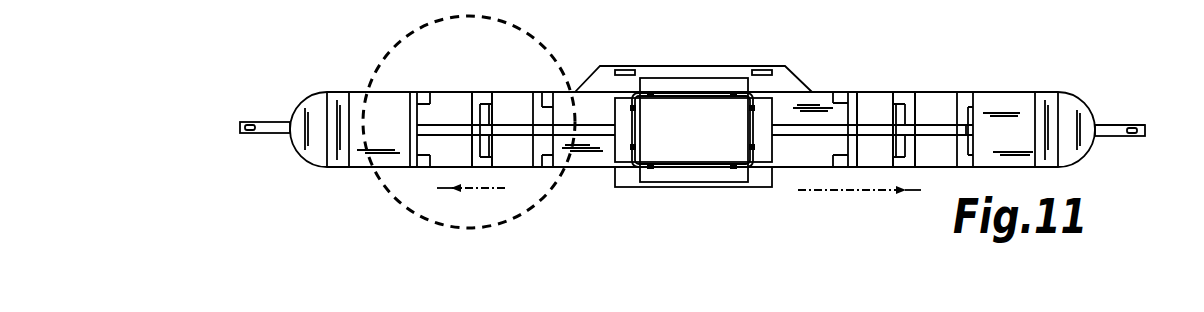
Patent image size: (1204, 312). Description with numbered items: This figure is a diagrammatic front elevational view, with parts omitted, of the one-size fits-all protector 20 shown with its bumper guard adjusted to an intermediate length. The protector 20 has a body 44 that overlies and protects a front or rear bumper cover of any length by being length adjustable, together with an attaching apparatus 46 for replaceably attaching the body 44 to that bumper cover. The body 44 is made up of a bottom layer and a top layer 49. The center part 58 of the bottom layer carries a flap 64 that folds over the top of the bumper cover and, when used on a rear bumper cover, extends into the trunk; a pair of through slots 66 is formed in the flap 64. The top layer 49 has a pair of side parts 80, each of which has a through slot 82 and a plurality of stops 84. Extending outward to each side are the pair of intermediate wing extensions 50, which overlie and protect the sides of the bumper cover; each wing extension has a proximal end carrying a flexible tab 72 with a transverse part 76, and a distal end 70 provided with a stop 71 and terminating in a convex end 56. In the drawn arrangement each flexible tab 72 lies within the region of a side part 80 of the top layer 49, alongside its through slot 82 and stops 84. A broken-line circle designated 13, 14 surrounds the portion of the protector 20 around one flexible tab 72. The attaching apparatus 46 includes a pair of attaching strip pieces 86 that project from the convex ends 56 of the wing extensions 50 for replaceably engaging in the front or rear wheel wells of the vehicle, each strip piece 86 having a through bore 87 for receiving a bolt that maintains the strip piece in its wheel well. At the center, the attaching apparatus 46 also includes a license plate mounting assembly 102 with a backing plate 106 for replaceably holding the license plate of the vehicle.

The one-size fits-all protector 20 is at (333, 58).
The pump assembly 13 is at (432, 156).
The pump assembly 14 is at (390, 206).
The pair of intermediate wing extensions 50 is at (304, 97).
The convex ends 56 is at (693, 107).
The distal end 70 is at (693, 107).
The stop 71 is at (693, 107).
The pair of attaching strip pieces 86 is at (689, 87).
The through bores 87 is at (250, 126).
The attaching apparatus 46 is at (1111, 122).
The plurality of stops 84 is at (422, 91).
The body 44 is at (906, 90).
The through slot 82 is at (450, 127).
The transverse part 76 is at (488, 107).
The flexible tab 72 is at (490, 150).
The pair of side parts 80 is at (588, 157).
The top layer 49 is at (816, 102).
The flap 64 is at (690, 73).
The pair of through slots 66 is at (633, 71).
The center part 58 is at (738, 189).
The license plate mounting assembly 102 is at (692, 158).
The backing plate 106 is at (668, 168).